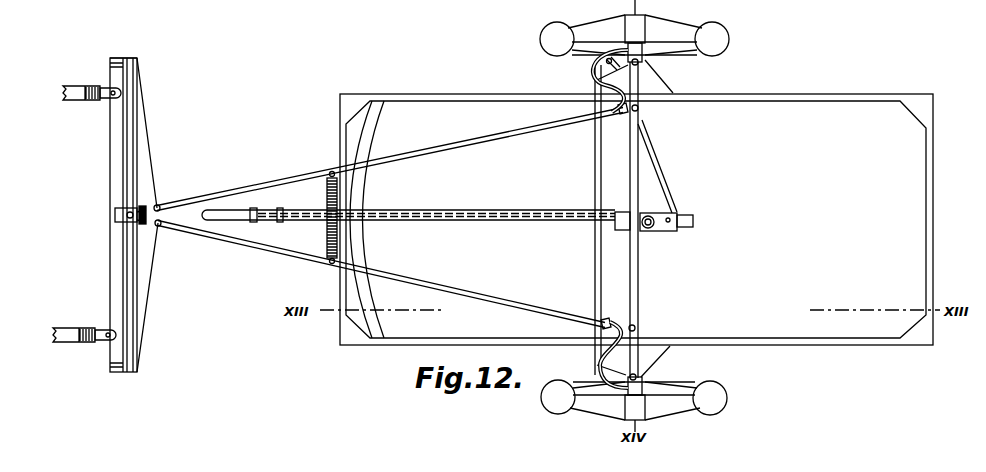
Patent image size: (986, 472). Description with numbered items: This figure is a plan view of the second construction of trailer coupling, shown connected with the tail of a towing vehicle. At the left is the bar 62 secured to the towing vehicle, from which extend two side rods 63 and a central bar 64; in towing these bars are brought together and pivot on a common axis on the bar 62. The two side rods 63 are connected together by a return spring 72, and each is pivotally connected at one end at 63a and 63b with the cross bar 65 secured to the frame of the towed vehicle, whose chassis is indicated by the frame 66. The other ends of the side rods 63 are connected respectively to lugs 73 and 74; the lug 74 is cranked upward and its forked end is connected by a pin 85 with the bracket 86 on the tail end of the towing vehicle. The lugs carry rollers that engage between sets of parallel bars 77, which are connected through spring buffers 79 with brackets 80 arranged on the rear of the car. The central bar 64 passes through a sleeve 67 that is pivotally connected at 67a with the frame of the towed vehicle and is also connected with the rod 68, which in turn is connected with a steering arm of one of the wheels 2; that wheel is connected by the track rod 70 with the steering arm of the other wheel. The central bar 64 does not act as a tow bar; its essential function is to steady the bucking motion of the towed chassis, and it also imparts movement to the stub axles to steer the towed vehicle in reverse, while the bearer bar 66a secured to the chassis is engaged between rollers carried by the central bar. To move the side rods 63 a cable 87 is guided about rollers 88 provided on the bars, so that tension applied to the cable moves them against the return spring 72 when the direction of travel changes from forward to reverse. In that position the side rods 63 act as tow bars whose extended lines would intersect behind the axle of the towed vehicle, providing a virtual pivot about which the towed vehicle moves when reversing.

The caster wheel assembly 2 is at (718, 38).
The bar 62 is at (127, 178).
The side rods 63 is at (265, 184).
The pivotal connection 63a is at (640, 108).
The pivotal connection 63b is at (636, 328).
The central bar 64 is at (444, 222).
The cross bar 65 is at (639, 190).
The towing vehicle chassis 66 is at (908, 180).
The bearer bar 66a is at (380, 112).
The sleeve 67 is at (616, 224).
The pivotal connection 67a is at (672, 230).
The rod 68 is at (652, 168).
The track rod 70 is at (597, 180).
The return spring 72 is at (328, 178).
The lug 73 is at (143, 207).
The lug 74 is at (139, 221).
The parallel bars 77 is at (137, 58).
The spring buffers 79 is at (108, 89).
The brackets 80 is at (73, 99).
The pin 85 is at (127, 217).
The bracket 86 is at (115, 212).
The cable 87 is at (142, 92).
The rollers 88 is at (159, 206).